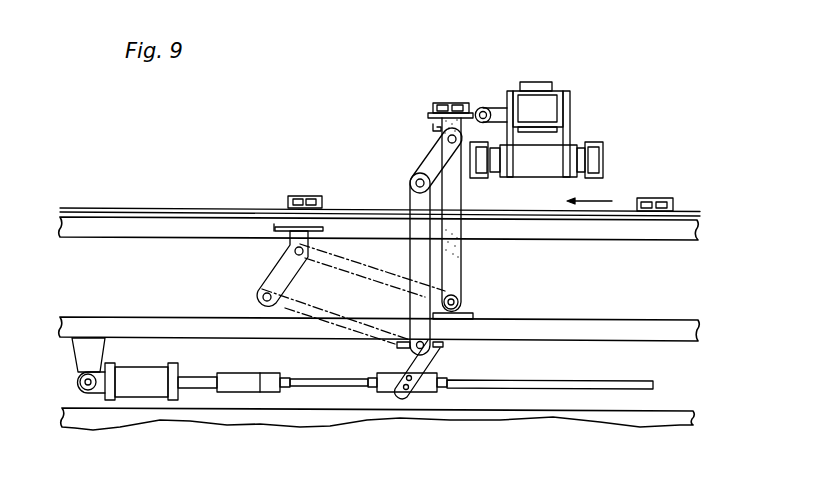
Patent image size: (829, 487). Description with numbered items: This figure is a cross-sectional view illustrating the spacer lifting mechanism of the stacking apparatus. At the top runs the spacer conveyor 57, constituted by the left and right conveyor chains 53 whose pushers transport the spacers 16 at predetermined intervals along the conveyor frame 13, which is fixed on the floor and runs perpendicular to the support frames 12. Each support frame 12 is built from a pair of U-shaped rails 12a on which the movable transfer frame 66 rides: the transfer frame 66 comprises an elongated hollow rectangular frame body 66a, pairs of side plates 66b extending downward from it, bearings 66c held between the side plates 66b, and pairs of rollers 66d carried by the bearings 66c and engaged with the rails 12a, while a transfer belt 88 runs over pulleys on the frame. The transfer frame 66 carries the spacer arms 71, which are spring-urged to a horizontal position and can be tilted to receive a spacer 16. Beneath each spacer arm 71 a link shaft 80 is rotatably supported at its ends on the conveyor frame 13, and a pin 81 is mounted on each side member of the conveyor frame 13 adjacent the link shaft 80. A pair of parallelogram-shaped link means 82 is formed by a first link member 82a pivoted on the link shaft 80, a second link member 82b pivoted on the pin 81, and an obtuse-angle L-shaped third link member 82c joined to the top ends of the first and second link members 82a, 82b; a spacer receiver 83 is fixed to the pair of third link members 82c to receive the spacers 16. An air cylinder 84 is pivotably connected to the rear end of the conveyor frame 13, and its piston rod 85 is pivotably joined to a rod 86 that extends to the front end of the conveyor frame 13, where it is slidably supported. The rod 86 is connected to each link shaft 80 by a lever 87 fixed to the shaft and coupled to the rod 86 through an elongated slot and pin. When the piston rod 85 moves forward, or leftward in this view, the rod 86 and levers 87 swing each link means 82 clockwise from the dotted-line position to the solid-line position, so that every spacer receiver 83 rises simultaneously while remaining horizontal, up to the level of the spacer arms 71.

The support frame 12 is at (661, 146).
The rails 12a is at (468, 158).
The conveyor frame 13 is at (628, 320).
The spacer 16 is at (308, 195).
The conveyor chain 53 is at (247, 205).
The spacer conveyor 57 is at (178, 203).
The transfer frame 66 is at (571, 120).
The frame body 66a is at (548, 83).
The side plates 66b is at (508, 92).
The bearings 66c is at (541, 165).
The rollers 66d is at (591, 179).
The spacer arm 71 is at (437, 130).
The link shaft 80 is at (470, 305).
The pin 81 is at (415, 349).
The link means 82 is at (396, 247).
The first link member 82a is at (470, 296).
The second link member 82b is at (416, 283).
The third link member 82c is at (422, 176).
The spacer receiver 83 is at (434, 112).
The air cylinder 84 is at (150, 389).
The piston rod 85 is at (203, 388).
The rod 86 is at (350, 387).
The lever 87 is at (436, 357).
The transfer belt 88 is at (538, 82).